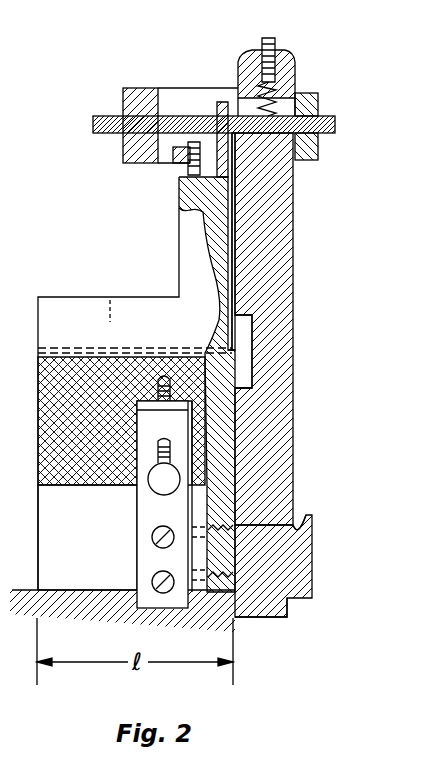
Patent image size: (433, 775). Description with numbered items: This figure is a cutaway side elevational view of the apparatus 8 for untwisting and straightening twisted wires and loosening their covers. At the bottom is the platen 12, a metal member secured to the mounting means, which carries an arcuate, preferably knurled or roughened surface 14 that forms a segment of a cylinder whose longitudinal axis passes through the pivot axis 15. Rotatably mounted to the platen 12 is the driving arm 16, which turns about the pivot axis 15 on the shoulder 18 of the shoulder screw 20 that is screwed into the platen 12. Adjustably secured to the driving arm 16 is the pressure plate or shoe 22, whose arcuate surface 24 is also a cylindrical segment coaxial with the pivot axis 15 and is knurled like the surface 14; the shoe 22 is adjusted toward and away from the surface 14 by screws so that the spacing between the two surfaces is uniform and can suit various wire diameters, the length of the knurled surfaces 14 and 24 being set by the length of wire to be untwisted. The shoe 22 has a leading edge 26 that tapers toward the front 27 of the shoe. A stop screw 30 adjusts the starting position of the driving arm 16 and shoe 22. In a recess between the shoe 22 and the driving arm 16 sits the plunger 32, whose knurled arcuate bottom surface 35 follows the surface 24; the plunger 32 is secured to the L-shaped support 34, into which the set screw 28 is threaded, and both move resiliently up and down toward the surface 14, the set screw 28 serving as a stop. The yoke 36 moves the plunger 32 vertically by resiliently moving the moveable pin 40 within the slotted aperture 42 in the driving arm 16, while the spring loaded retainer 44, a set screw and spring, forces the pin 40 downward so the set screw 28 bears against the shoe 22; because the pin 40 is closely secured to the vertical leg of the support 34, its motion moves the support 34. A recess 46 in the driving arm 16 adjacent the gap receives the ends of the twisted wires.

The apparatus 8 is at (286, 329).
The platen 12 is at (98, 535).
The arcuate surface 14 is at (96, 438).
The pivot axis 15 is at (233, 557).
The driving arm 16 is at (295, 316).
The shoulder 18 is at (300, 525).
The shoulder screw 20 is at (305, 600).
The pressure plate or shoe 22 is at (163, 296).
The arcuate surface 24 is at (38, 349).
The leading edge 26 is at (110, 296).
The front 27 is at (38, 310).
The set screw 28 is at (190, 172).
The stop screw 30 is at (172, 443).
The plunger 32 is at (233, 220).
The L-shaped support 34 is at (219, 102).
The arcuate bottom surface 35 is at (235, 352).
The yoke 36 is at (128, 88).
The moveable pin 40 is at (332, 117).
The slotted aperture 42 is at (284, 108).
The spring loaded retainer 44 is at (276, 46).
The recess 46 is at (243, 380).